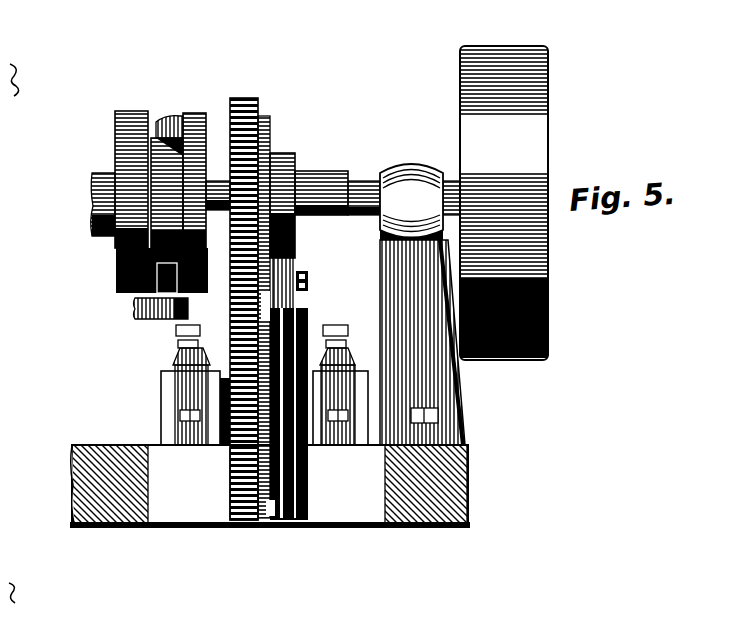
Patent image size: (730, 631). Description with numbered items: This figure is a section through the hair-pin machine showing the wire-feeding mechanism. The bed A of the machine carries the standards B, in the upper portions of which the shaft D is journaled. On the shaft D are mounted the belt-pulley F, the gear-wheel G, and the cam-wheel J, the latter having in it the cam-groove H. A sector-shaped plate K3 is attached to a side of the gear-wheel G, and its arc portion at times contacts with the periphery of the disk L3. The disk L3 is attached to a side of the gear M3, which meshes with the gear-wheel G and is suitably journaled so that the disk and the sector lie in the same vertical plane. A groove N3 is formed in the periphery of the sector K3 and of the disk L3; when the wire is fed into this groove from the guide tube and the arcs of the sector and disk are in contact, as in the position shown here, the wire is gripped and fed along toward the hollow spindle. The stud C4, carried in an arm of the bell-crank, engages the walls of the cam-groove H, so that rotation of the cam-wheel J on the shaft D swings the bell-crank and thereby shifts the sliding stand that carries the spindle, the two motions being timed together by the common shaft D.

The bed A is at (459, 480).
The standards B is at (430, 372).
The stud C4 is at (151, 313).
The shaft D is at (213, 172).
The belt-pulley F is at (504, 203).
The gear-wheel G is at (243, 90).
The cam-groove H is at (167, 106).
The cam-wheel J is at (110, 152).
The sector-shaped plate K3 is at (279, 261).
The disk L3 is at (293, 487).
The gear M3 is at (243, 510).
The groove N3 is at (290, 303).